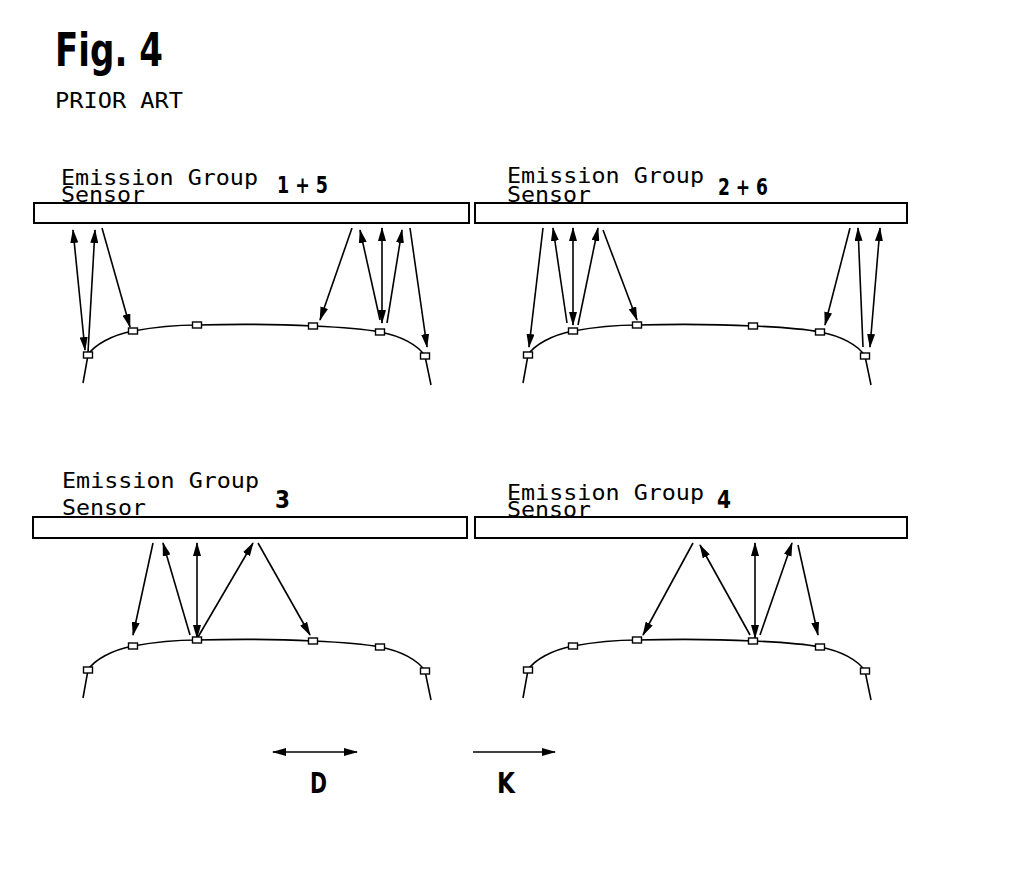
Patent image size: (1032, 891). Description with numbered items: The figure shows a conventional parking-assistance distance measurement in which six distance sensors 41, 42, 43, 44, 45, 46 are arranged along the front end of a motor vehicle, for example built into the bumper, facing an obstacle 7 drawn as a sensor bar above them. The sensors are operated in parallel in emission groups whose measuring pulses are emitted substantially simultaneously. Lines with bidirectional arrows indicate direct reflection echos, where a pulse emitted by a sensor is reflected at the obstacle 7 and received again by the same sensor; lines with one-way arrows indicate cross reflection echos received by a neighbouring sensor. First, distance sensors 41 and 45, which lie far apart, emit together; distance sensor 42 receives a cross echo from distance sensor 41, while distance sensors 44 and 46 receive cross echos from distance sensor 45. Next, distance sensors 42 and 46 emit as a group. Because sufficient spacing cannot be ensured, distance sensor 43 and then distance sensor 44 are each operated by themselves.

The obstacle 7 is at (425, 212).
The distance sensor 41 is at (320, 537).
The distance sensor 42 is at (365, 513).
The distance sensor 43 is at (426, 509).
The distance sensor 44 is at (527, 508).
The distance sensor 45 is at (592, 513).
The distance sensor 46 is at (640, 540).